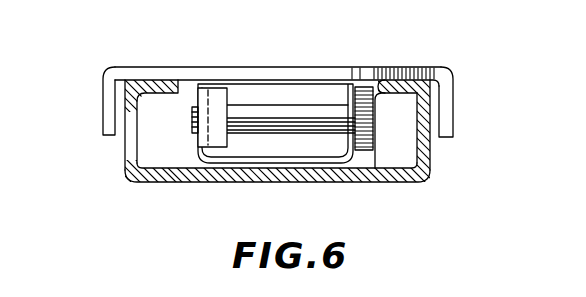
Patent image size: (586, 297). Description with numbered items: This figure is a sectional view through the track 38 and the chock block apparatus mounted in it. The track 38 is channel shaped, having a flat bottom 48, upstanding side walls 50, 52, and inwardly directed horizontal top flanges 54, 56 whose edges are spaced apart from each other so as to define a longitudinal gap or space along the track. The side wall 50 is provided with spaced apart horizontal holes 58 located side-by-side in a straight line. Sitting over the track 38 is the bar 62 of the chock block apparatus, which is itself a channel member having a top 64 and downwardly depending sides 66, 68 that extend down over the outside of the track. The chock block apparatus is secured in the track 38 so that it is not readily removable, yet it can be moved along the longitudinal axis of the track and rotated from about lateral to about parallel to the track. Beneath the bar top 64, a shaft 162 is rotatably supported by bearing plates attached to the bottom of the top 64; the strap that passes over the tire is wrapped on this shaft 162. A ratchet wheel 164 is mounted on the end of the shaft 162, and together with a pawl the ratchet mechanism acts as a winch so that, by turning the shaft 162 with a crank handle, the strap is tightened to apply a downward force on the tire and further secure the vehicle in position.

The track 38 is at (275, 116).
The flat bottom 48 is at (196, 183).
The side wall 50 is at (123, 158).
The side wall 52 is at (432, 144).
The horizontal top flange 54 is at (161, 86).
The horizontal top flange 56 is at (392, 88).
The horizontal holes 58 is at (128, 138).
The bar 62 is at (274, 69).
The top 64 is at (251, 67).
The side 66 is at (102, 96).
The side 68 is at (454, 103).
The shaft 162 is at (289, 107).
The ratchet wheel 164 is at (364, 152).